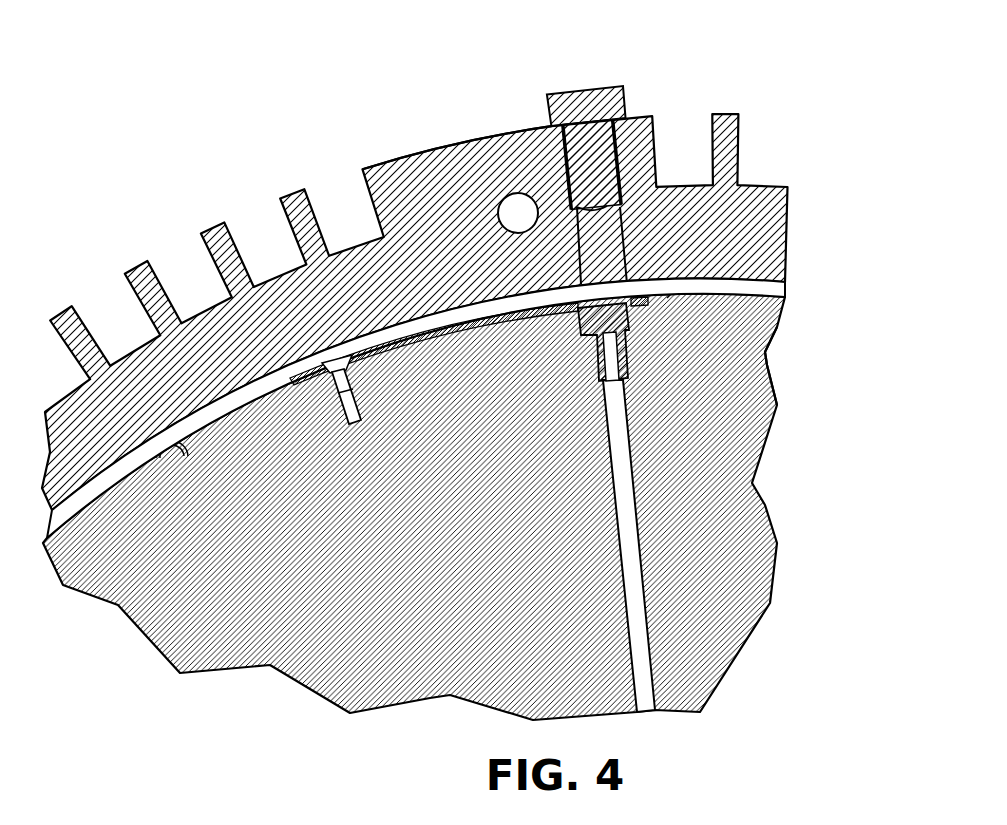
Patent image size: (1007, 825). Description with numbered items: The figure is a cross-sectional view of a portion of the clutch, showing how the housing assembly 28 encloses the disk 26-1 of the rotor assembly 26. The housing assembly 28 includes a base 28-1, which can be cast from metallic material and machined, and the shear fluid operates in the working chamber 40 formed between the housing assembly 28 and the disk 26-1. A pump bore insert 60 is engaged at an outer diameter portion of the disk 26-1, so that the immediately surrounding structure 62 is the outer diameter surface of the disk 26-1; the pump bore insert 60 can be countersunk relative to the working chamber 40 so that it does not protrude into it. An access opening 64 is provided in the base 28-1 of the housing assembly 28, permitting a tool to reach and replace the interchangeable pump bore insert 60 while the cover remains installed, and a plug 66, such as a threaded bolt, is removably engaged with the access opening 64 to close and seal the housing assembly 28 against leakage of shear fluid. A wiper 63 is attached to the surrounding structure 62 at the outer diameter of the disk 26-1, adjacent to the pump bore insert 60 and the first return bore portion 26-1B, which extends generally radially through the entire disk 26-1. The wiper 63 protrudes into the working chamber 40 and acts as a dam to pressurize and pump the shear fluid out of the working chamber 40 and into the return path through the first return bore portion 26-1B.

The rotor assembly 26 is at (692, 446).
The disk 26-1 is at (693, 378).
The first return bore portion 26-1B is at (630, 537).
The housing assembly 28 is at (390, 166).
The base 28-1 is at (447, 155).
The working chamber 40 is at (728, 287).
The pump bore insert 60 is at (630, 320).
The immediately surrounding structure 62 is at (663, 293).
The wiper 63 is at (363, 343).
The access opening 64 is at (605, 242).
The plug 66 is at (590, 93).